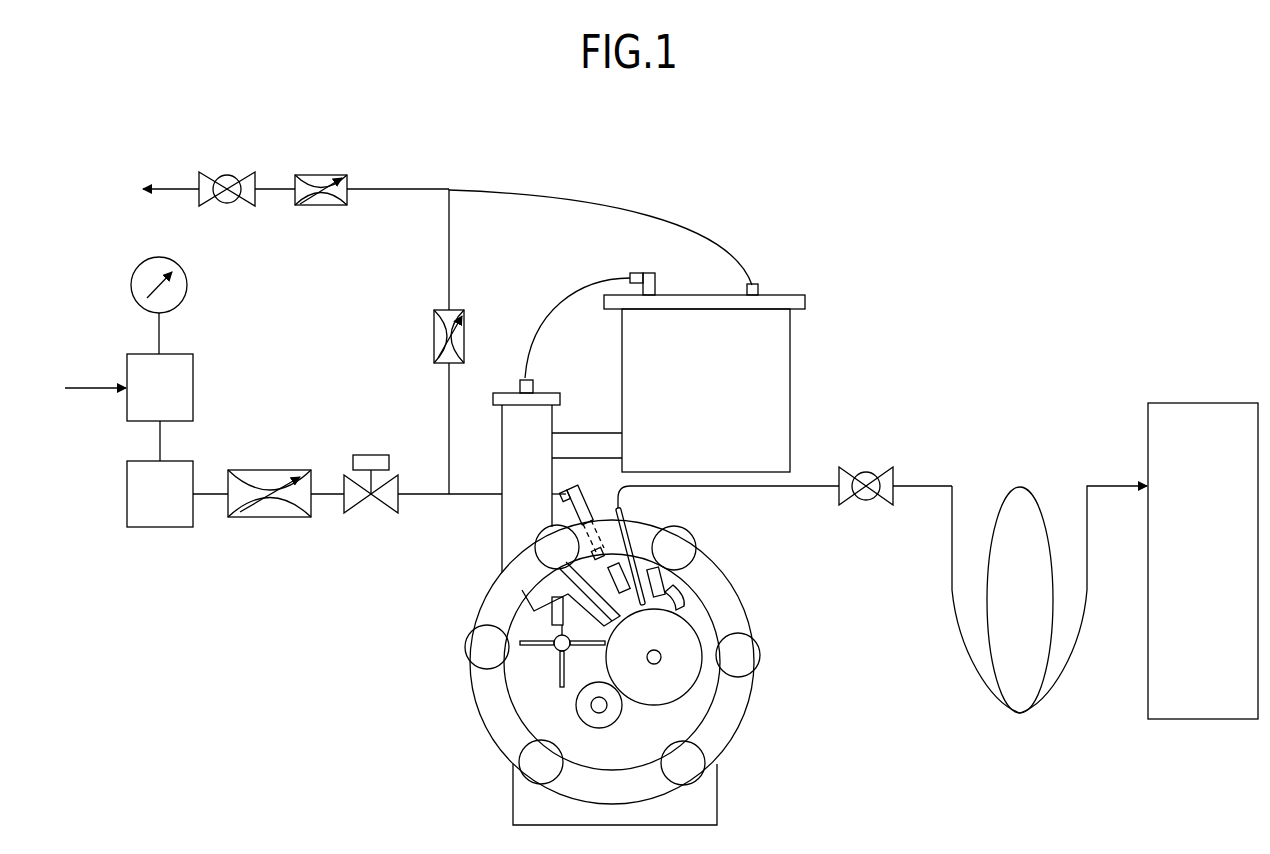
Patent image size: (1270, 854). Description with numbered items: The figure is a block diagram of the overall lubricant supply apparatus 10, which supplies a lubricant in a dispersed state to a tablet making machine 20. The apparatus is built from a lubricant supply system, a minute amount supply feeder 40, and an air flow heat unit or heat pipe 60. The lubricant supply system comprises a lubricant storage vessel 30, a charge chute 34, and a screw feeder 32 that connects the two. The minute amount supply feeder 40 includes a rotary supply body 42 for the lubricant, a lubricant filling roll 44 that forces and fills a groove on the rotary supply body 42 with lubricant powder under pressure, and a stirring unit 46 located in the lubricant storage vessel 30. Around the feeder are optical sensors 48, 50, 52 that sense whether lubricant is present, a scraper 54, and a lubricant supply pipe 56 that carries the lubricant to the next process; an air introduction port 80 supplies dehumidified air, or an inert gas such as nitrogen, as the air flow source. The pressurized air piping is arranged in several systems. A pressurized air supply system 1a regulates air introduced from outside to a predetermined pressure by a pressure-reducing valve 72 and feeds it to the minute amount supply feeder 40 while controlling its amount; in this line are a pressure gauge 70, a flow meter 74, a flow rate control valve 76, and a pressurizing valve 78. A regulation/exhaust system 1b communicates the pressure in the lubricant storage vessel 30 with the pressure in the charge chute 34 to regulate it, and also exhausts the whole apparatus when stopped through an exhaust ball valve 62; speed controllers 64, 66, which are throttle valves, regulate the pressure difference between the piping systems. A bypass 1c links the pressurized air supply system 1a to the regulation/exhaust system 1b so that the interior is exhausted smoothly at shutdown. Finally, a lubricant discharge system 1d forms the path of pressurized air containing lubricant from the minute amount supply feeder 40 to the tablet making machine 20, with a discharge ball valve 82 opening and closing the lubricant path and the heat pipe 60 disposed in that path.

The lubricant supply apparatus 10 is at (905, 152).
The pressurized air supply system 1a is at (93, 392).
The regulation/exhaust system 1b is at (425, 188).
The bypass 1c is at (448, 412).
The lubricant discharge system 1d is at (958, 612).
The tablet making machine 20 is at (1186, 412).
The lubricant storage vessel 30 is at (792, 360).
The screw feeder 32 is at (572, 443).
The charge chute 34 is at (526, 462).
The minute amount supply feeder 40 is at (757, 738).
The rotary supply body 42 is at (688, 664).
The lubricant filling roll 44 is at (583, 708).
The stirring unit 46 is at (545, 657).
The optical sensor 48 is at (551, 620).
The optical sensor 50 is at (633, 553).
The optical sensor 52 is at (700, 562).
The scraper 54 is at (688, 606).
The lubricant supply pipe 56 is at (643, 555).
The air flow heat unit (heat pipe) 60 is at (1016, 496).
The exhaust ball valve 62 is at (227, 175).
The speed controller 64 is at (311, 179).
The speed controller 66 is at (433, 326).
The pressure gauge 70 is at (188, 284).
The pressure-reducing valve 72 is at (191, 390).
The flow meter 74 is at (157, 530).
The flow rate control valve 76 is at (286, 518).
The pressurizing valve 78 is at (366, 508).
The air introduction port 80 is at (590, 497).
The discharge ball valve 82 is at (867, 500).